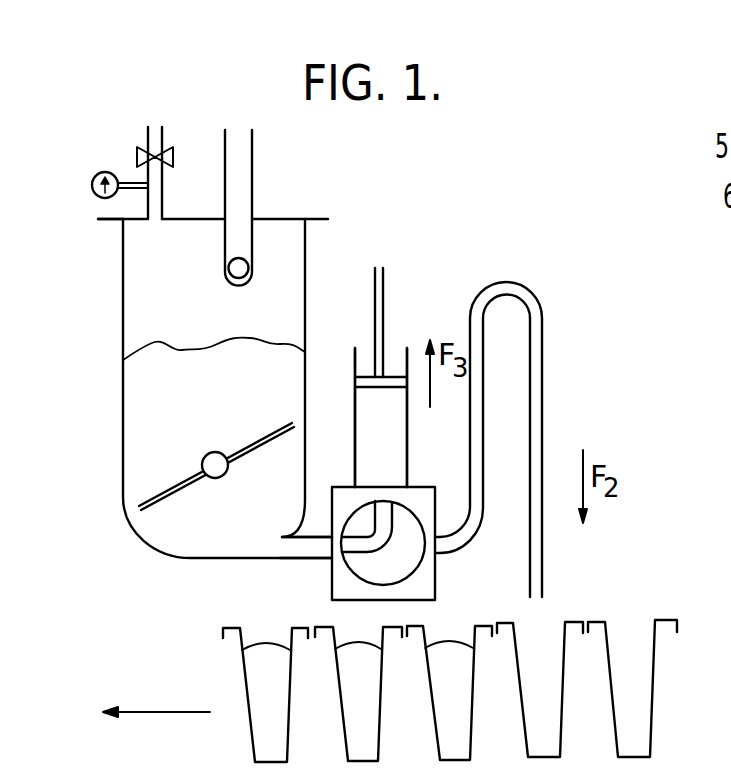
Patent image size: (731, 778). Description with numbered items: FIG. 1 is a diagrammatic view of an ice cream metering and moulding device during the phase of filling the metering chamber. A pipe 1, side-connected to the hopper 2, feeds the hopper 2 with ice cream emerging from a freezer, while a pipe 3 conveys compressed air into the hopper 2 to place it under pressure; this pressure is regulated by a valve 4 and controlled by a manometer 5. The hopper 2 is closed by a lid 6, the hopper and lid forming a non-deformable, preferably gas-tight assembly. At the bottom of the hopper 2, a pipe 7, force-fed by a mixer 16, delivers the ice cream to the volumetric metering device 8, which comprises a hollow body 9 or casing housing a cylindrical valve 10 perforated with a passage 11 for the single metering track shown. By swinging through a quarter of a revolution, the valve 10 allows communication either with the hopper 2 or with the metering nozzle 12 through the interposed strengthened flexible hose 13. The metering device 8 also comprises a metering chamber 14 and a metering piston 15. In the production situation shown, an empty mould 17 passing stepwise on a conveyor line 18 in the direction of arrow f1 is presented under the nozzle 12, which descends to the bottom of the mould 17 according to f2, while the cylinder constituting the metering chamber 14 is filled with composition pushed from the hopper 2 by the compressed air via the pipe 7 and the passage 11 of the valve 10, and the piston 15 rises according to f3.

The pipe 1 is at (235, 247).
The hopper 2 is at (123, 305).
The pipe 3 is at (155, 127).
The valve 4 is at (137, 155).
The manometer 5 is at (95, 173).
The lid 6 is at (118, 219).
The pipe 7 is at (300, 548).
The volumetric metering device 8 is at (422, 237).
The hollow body 9 is at (332, 575).
The cylindrical valve 10 is at (400, 558).
The passage 11 is at (365, 547).
The metering nozzle 12 is at (540, 432).
The strengthened flexible hose 13 is at (505, 282).
The metering chamber 14 is at (370, 425).
The metering piston 15 is at (385, 305).
The mixer 16 is at (167, 497).
The mould 17 is at (563, 627).
The conveyor line 18 is at (708, 723).